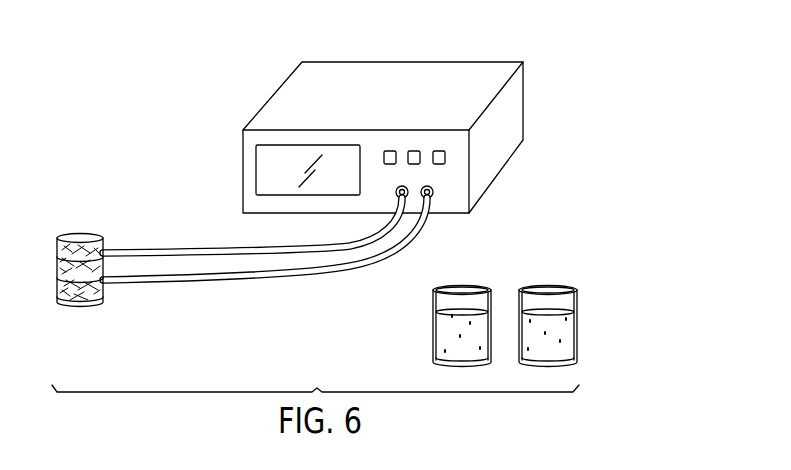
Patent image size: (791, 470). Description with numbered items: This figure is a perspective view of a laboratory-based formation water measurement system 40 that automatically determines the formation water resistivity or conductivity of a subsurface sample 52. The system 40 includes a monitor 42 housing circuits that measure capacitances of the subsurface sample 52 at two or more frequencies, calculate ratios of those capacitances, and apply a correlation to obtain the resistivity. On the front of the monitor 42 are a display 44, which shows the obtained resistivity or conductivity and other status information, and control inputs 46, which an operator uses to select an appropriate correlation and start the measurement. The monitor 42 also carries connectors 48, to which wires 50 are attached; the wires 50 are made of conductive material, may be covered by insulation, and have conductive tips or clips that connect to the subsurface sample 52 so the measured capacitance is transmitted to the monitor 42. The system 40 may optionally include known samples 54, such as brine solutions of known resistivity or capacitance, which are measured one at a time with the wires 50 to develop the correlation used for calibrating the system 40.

The laboratory-based formation water measurement system 40 is at (143, 42).
The monitor 42 is at (429, 59).
The display 44 is at (315, 143).
The control inputs 46 is at (440, 165).
The connectors 48 is at (435, 206).
The wires 50 is at (147, 251).
The subsurface sample 52 is at (76, 234).
The known samples 54 is at (460, 312).